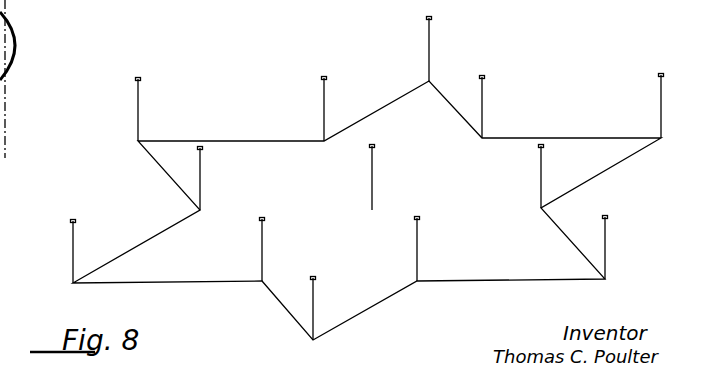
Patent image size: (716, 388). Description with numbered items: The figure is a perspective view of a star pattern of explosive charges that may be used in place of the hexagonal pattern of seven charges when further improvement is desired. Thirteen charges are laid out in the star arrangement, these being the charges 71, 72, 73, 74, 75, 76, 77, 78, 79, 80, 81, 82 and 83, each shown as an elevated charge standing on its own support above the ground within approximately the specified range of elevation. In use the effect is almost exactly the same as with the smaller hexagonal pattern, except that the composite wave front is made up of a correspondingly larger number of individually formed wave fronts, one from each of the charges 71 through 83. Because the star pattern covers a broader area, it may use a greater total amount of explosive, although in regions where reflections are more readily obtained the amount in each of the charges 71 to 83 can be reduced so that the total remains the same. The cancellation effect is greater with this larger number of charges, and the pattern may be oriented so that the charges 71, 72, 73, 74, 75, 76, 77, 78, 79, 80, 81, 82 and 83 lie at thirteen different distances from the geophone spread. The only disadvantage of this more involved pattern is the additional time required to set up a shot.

The charge 71 is at (202, 149).
The charge 72 is at (264, 220).
The charge 73 is at (374, 147).
The charge 74 is at (419, 219).
The charge 75 is at (539, 147).
The charge 76 is at (484, 78).
The charge 77 is at (326, 79).
The charge 78 is at (140, 80).
The charge 79 is at (71, 222).
The charge 80 is at (315, 279).
The charge 81 is at (607, 218).
The charge 82 is at (663, 76).
The charge 83 is at (431, 19).